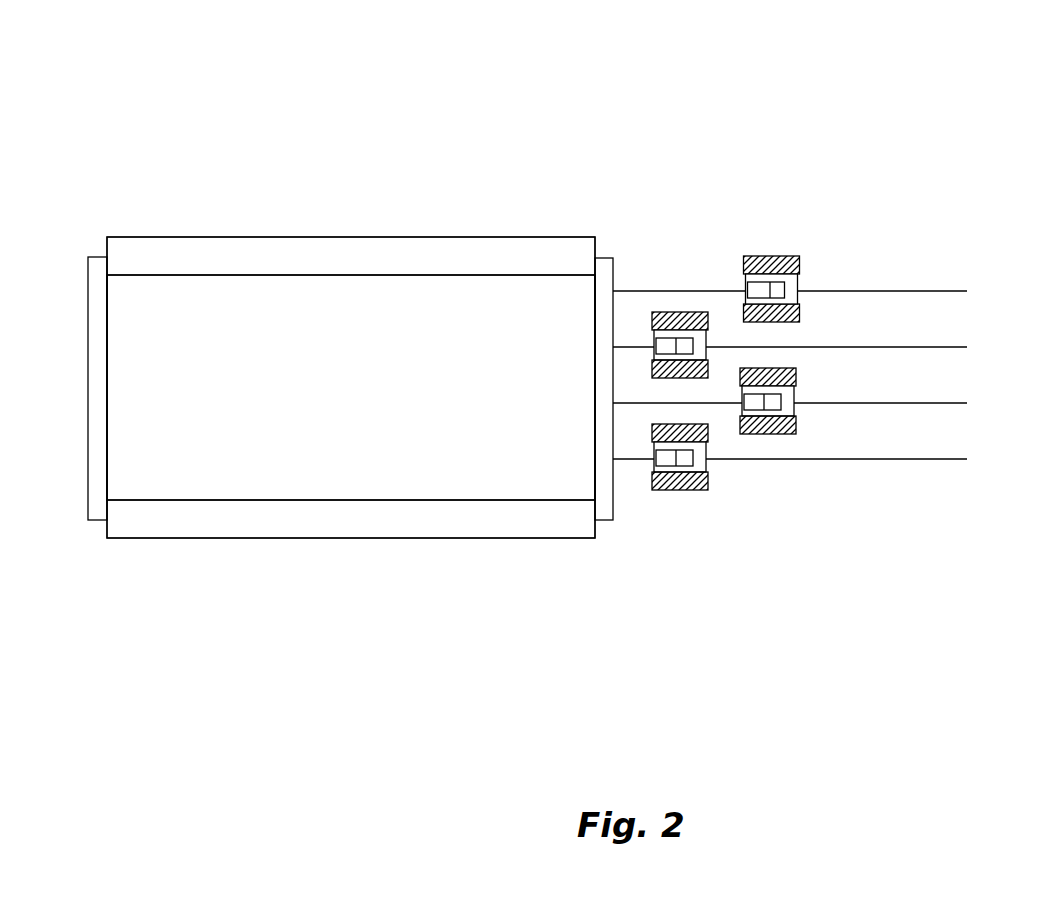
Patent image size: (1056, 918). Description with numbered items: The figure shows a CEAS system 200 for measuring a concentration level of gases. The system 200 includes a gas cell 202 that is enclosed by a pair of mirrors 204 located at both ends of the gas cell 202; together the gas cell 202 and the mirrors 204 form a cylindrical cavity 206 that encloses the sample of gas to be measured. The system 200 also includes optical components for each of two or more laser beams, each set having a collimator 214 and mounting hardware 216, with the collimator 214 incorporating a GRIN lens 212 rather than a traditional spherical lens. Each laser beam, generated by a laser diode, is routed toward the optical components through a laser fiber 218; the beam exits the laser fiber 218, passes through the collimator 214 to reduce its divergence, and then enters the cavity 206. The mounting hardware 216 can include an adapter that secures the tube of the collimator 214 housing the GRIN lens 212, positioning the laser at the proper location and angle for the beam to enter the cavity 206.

The CEAS system 200 is at (560, 279).
The gas cell 202 is at (220, 237).
The mirrors 204 is at (88, 520).
The cylindrical cavity 206 is at (224, 453).
The GRIN lens 212 is at (742, 260).
The collimator 214 is at (800, 278).
The mounting hardware 216 is at (785, 257).
The laser fiber 218 is at (920, 289).